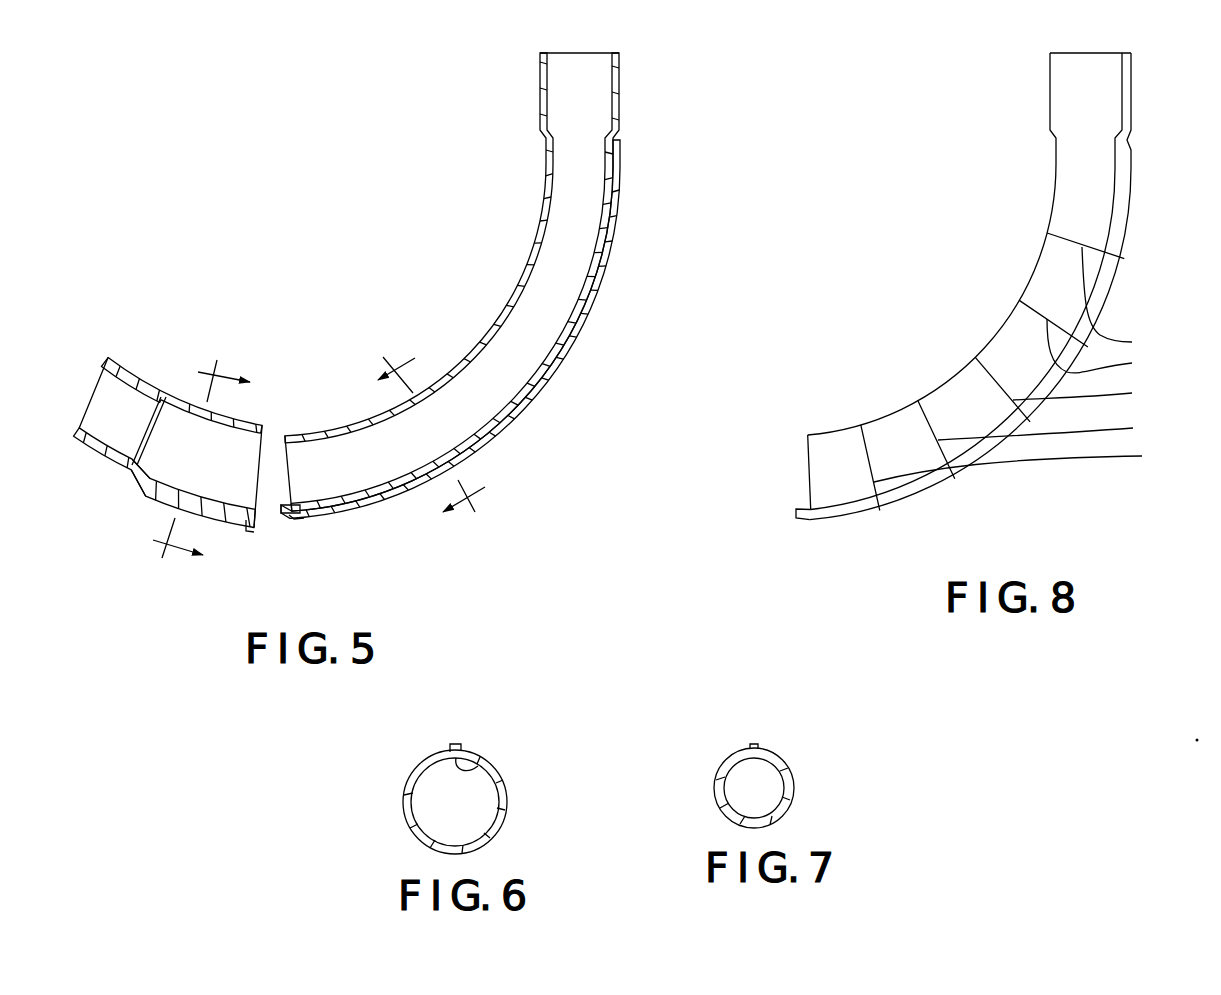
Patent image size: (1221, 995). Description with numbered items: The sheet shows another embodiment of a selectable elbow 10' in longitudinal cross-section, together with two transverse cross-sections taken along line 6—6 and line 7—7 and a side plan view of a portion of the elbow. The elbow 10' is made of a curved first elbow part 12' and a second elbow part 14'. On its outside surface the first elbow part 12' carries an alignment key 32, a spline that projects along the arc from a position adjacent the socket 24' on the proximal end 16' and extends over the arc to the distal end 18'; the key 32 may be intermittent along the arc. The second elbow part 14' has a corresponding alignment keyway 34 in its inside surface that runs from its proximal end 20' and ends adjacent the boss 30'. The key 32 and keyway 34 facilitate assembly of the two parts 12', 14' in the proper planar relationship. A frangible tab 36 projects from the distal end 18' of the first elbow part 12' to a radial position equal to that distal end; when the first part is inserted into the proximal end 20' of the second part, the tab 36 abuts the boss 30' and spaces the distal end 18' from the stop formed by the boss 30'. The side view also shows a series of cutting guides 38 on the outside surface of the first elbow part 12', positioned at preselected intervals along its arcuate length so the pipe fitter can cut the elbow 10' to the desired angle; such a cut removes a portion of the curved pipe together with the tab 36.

In FIG. 5, the elbow 10' is at (388, 328).
In FIG. 5, the first elbow part 12' is at (419, 248).
In FIG. 7, the first elbow part 12' is at (782, 788).
In FIG. 5, the second elbow part 14' is at (123, 501).
In FIG. 6, the second elbow part 14' is at (481, 732).
In FIG. 5, the proximal end 16' is at (482, 282).
In FIG. 5, the distal end 18' is at (312, 445).
In FIG. 5, the proximal end 20' is at (194, 423).
In FIG. 5, the socket 24' is at (621, 61).
In FIG. 5, the boss 30' is at (157, 391).
In FIG. 5, the alignment key 32 is at (531, 396).
In FIG. 8, the alignment key 32 is at (855, 525).
In FIG. 7, the alignment key 32 is at (748, 746).
In FIG. 5, the alignment keyway 34 is at (250, 536).
In FIG. 6, the alignment keyway 34 is at (474, 768).
In FIG. 5, the frangible tab 36 is at (286, 521).
In FIG. 8, the frangible tab 36 is at (800, 513).
In FIG. 8, the cutting guides 38 is at (1148, 322).
In FIG. 5, the section line 6— 6 is at (201, 459).
In FIG. 5, the section line 7— 7 is at (436, 430).